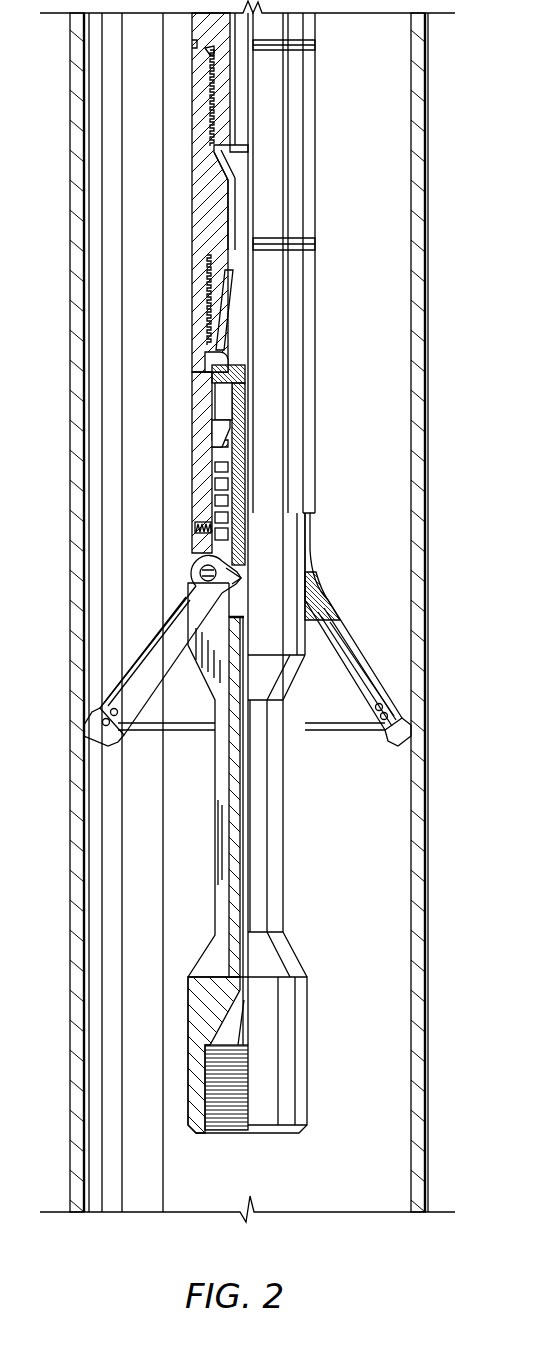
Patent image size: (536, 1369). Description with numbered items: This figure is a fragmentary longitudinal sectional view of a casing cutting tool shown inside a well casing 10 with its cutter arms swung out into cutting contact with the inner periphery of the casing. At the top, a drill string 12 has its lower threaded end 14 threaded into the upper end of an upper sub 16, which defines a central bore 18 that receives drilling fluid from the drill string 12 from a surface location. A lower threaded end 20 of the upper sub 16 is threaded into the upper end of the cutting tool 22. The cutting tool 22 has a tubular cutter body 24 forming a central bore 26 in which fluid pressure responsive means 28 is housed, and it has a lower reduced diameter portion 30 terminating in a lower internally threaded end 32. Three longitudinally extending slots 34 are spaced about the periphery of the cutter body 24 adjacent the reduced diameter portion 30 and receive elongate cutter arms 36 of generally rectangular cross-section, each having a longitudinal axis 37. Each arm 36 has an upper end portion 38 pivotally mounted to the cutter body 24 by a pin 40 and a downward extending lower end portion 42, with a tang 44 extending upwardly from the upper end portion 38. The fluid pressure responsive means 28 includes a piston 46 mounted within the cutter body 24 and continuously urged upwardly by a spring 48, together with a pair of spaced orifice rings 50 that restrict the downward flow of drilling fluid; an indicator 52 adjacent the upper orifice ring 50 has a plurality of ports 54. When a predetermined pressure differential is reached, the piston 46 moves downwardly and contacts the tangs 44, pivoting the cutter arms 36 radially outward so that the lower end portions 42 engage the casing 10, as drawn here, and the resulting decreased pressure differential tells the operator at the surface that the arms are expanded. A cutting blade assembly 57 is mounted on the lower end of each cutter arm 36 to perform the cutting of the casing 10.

The well casing 10 is at (421, 120).
The drill string 12 is at (186, 27).
The lower threaded end 14 is at (212, 86).
The upper sub 16 is at (187, 213).
The central bore 18 is at (234, 204).
The lower threaded end 20 is at (207, 291).
The cutting tool 22 is at (182, 399).
The tubular cutter body 24 is at (208, 494).
The central bore 26 is at (222, 513).
The fluid pressure responsive means 28 is at (200, 441).
The lower reduced diameter portion 30 is at (252, 885).
The lower internally threaded end 32 is at (211, 1120).
The longitudinally extending slots 34 is at (200, 561).
The elongate cutter arm 36 is at (155, 650).
The longitudinal axis 37 is at (365, 700).
The upper end portion 38 is at (190, 591).
The pin 40 is at (200, 577).
The lower end portion 42 is at (138, 676).
The tang 44 is at (240, 579).
The piston 46 is at (222, 468).
The spring 48 is at (232, 520).
The orifice ring 50 is at (245, 418).
The indicator 52 is at (245, 373).
The ports 54 is at (205, 352).
The cutting blade assembly 57 is at (118, 745).